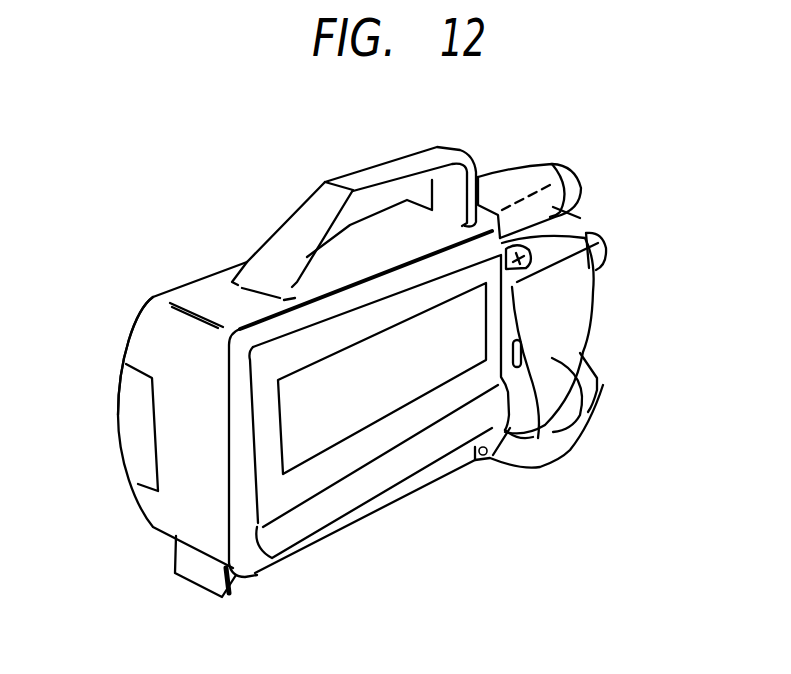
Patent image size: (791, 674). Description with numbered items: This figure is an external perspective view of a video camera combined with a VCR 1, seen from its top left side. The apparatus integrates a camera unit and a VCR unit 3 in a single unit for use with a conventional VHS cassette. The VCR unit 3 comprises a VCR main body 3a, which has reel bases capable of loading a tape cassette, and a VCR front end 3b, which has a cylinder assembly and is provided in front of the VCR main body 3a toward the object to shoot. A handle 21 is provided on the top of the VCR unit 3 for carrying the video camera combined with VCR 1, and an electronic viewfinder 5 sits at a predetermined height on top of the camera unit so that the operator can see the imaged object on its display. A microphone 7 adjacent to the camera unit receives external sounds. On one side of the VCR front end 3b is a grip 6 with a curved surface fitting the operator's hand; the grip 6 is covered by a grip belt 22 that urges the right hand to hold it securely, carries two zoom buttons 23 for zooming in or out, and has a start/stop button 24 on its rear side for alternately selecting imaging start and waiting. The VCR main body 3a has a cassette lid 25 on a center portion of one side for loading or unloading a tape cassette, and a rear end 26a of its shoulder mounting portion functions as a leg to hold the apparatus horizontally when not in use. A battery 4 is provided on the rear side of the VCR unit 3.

The video camera combined with a VCR 1 is at (147, 258).
The VCR unit 3 is at (135, 512).
The VCR main body 3a is at (153, 335).
The VCR front end 3b is at (583, 328).
The battery 4 is at (137, 437).
The electronic viewfinder 5 is at (513, 184).
The grip 6 is at (590, 380).
The microphone 7 is at (607, 243).
The handle 21 is at (327, 180).
The grip belt 22 is at (533, 453).
The zoom buttons 23 is at (533, 260).
The start/stop button 24 is at (523, 372).
The cassette lid 25 is at (367, 483).
The rear end of the shoulder mounting portion 26a is at (204, 577).